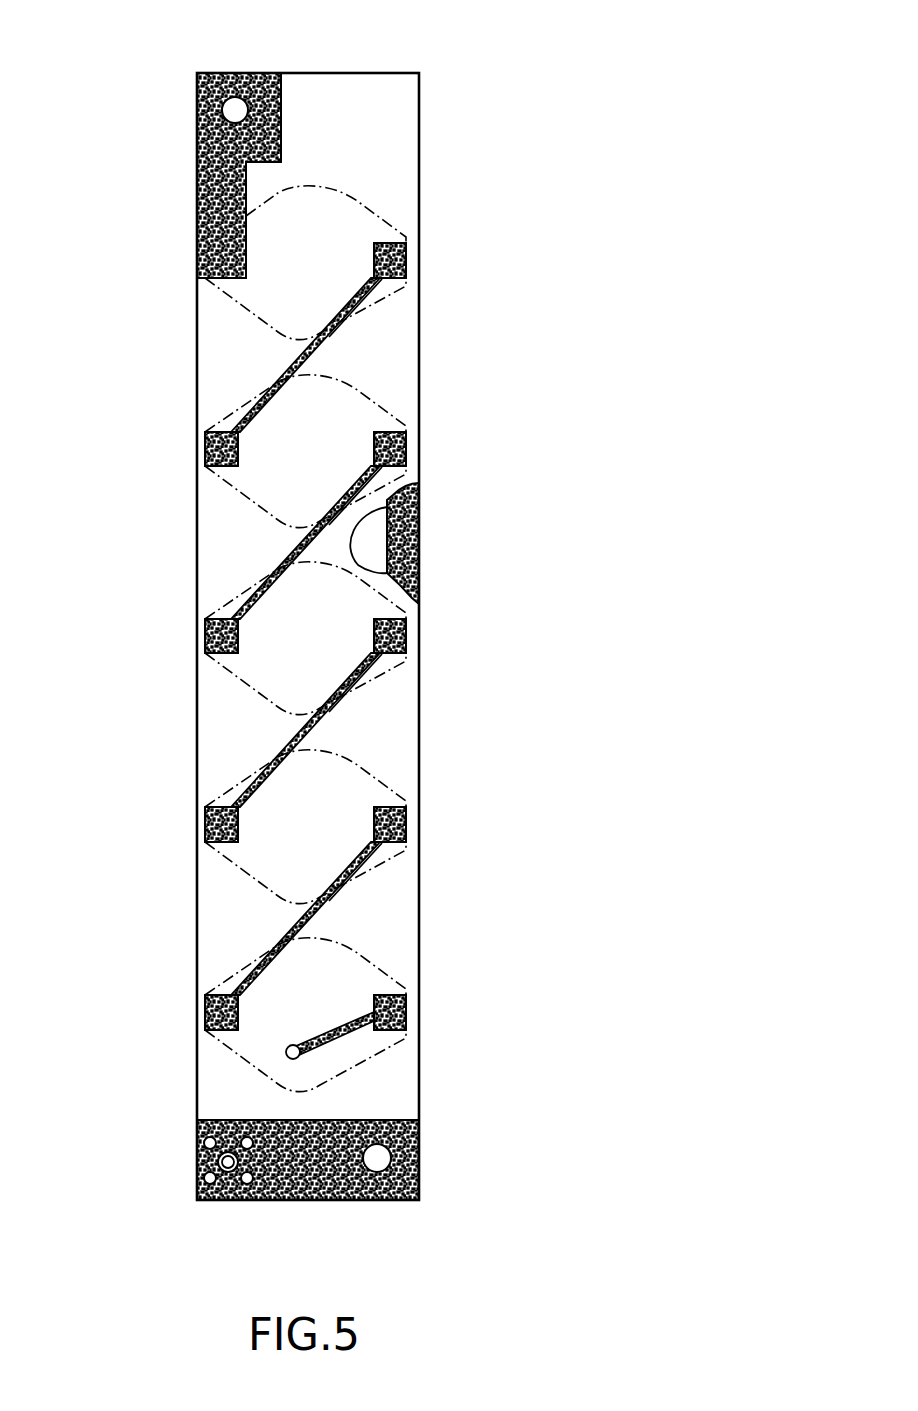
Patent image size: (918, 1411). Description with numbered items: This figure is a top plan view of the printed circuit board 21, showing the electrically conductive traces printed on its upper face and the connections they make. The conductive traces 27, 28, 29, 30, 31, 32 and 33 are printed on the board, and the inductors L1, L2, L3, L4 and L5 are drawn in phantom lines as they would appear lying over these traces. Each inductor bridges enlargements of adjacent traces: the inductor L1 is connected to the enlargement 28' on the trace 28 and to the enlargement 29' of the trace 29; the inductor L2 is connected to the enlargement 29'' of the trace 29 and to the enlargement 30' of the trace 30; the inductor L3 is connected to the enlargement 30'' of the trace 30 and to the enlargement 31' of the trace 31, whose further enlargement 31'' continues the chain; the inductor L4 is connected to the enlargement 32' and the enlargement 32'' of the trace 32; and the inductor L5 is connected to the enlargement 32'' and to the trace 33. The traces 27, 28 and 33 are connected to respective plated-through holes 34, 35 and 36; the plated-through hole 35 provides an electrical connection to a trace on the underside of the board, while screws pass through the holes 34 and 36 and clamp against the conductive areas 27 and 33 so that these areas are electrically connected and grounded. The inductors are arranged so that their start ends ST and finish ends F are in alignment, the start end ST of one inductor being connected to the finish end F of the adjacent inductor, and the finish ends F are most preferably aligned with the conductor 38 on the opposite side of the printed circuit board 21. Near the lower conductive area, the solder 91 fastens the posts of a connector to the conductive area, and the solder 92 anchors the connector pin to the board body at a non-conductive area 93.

The printed circuit board 21 is at (367, 68).
The conductive trace 27 is at (315, 1170).
The conductive trace 28 is at (389, 987).
The enlargement 28' is at (460, 999).
The conductive trace 29 is at (241, 918).
The enlargement 29' is at (162, 980).
The enlargement 29'' is at (467, 811).
The conductive trace 30 is at (241, 730).
The enlargement 30' is at (162, 792).
The enlargement 30'' is at (467, 622).
The conductive trace 31 is at (241, 542).
The enlargement 31' is at (162, 604).
The enlargement 31'' is at (467, 435).
The conductive trace 32 is at (241, 355).
The enlargement 32' is at (162, 417).
The enlargement 32'' is at (467, 247).
The conductive trace 33 is at (222, 185).
The plated-through hole 34 is at (383, 1170).
The plated-through hole 35 is at (299, 1056).
The plated-through hole 36 is at (234, 97).
The conductor 38 is at (400, 535).
The solder 91 is at (247, 1140).
The solder 92 is at (220, 1160).
The non-conductive area 93 is at (228, 1172).
The start end ST is at (207, 283).
The finish end F is at (406, 277).
The inductor L1 is at (355, 936).
The inductor L2 is at (355, 748).
The inductor L3 is at (235, 580).
The inductor L4 is at (355, 372).
The inductor L5 is at (355, 182).